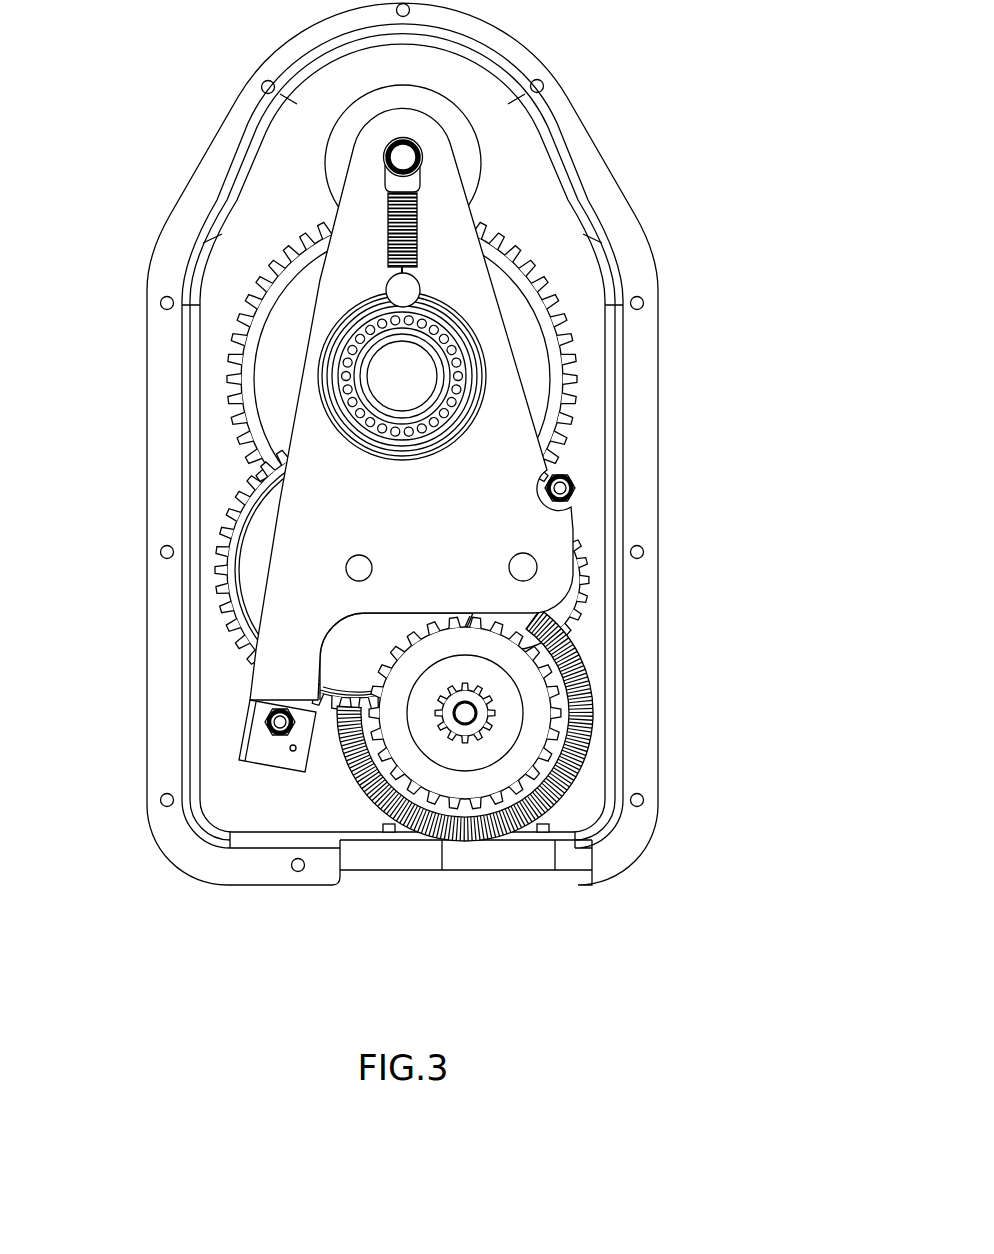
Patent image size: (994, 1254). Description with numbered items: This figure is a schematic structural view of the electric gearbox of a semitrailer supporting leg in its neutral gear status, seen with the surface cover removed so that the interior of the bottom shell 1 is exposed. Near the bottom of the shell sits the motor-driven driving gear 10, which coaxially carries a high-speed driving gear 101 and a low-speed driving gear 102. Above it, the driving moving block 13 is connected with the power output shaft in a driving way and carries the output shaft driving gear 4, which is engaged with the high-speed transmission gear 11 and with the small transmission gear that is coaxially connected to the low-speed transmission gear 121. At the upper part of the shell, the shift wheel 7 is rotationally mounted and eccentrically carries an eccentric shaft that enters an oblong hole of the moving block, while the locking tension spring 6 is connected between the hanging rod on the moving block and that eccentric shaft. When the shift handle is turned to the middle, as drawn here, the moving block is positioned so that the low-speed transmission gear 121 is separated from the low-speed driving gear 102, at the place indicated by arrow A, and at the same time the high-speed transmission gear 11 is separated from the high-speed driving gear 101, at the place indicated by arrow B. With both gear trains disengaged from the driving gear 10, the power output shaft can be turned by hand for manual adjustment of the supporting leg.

The bottom shell 1 is at (228, 157).
The output shaft driving gear 4 is at (275, 350).
The locking tension spring 6 is at (405, 240).
The shift wheel 7 is at (408, 152).
The driving gear 10 is at (535, 793).
The high-speed transmission gear 11 is at (583, 553).
The driving moving block 13 is at (500, 433).
The high-speed driving gear 101 is at (465, 725).
The low-speed driving gear 102 is at (589, 745).
The low-speed transmission gear 121 is at (227, 535).
The arrow A is at (493, 677).
The arrow B is at (556, 623).